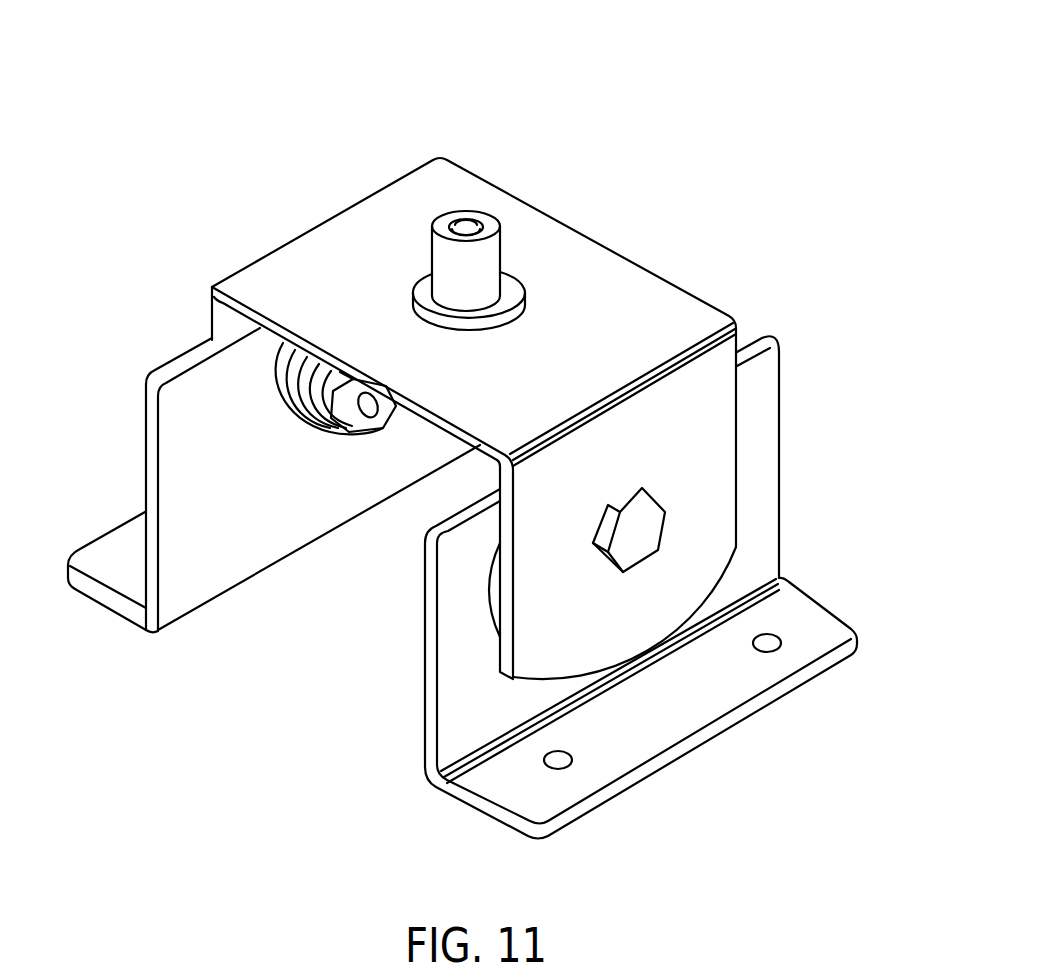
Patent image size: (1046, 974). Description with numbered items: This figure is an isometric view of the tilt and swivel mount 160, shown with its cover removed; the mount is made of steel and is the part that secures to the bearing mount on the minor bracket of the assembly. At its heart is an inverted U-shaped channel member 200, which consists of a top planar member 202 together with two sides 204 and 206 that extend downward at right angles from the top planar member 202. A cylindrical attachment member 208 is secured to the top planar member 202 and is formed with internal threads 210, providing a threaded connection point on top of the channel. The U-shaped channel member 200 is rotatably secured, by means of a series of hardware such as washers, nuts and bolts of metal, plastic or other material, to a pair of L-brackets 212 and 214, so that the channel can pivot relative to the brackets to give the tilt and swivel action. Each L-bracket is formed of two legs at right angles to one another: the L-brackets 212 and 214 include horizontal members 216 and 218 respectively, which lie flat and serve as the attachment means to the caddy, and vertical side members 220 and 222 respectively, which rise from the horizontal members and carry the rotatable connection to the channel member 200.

The tilt and swivel mount 160 is at (666, 122).
The inverted U-shaped channel member 200 is at (737, 287).
The top planar member 202 is at (582, 275).
The side 204 is at (715, 453).
The side 206 is at (216, 320).
The cylindrical attachment member 208 is at (488, 265).
The internal threads 210 is at (478, 214).
The L-bracket 212 is at (134, 477).
The L-bracket 214 is at (813, 522).
The horizontal member 216 is at (106, 576).
The horizontal member 218 is at (497, 783).
The vertical side member 220 is at (150, 422).
The vertical side member 222 is at (765, 382).